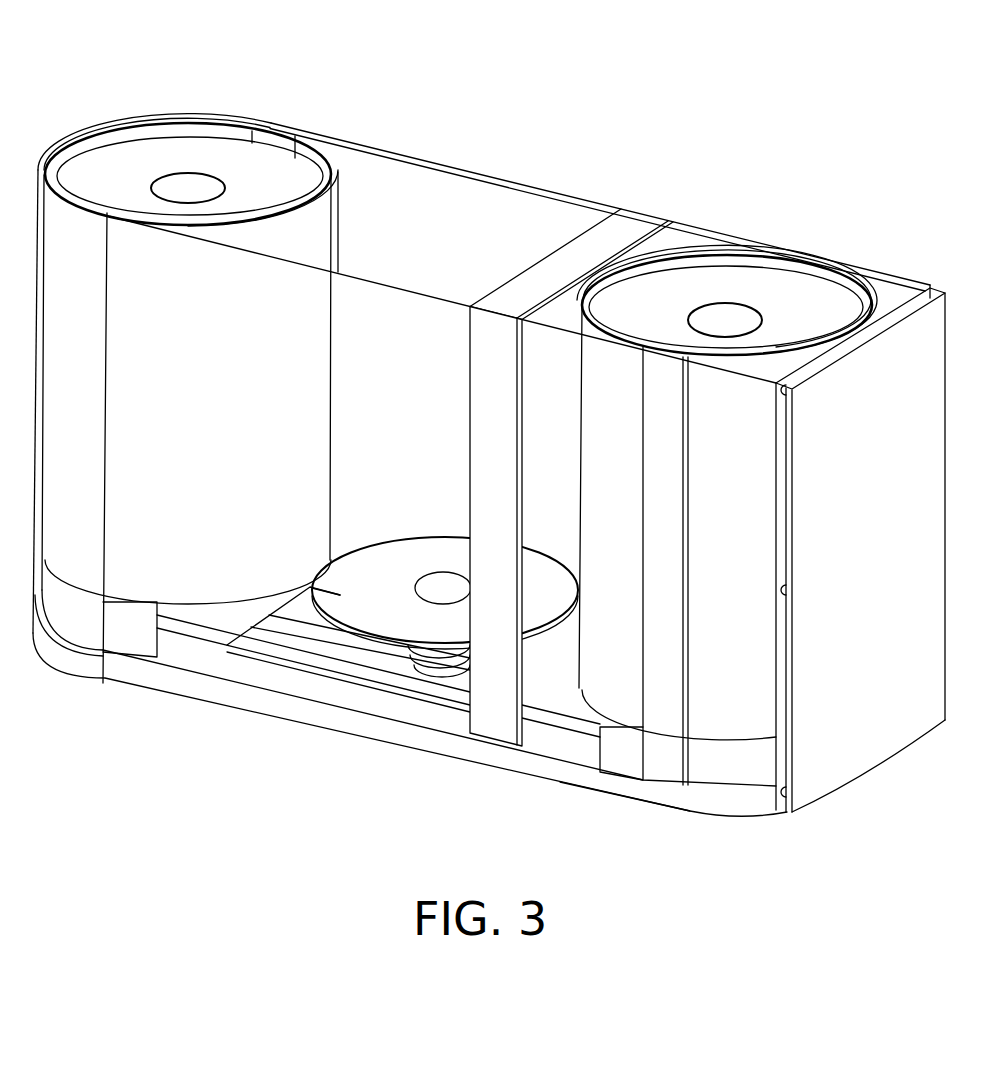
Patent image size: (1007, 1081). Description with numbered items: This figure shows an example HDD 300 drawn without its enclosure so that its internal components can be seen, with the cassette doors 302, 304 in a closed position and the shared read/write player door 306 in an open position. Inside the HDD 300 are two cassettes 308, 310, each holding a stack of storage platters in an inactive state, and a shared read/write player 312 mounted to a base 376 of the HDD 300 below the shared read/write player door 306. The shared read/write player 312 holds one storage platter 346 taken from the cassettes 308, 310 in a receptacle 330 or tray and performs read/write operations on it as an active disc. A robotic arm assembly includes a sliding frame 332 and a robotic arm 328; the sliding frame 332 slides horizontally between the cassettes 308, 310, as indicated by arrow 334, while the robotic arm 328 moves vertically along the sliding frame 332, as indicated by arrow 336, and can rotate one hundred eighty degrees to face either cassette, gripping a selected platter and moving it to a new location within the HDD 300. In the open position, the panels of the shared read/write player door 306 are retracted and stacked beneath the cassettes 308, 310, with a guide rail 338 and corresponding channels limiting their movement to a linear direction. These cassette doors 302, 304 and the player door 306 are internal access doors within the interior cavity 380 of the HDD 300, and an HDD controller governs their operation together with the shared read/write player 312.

The HDD 300 is at (762, 92).
The cassette door 302 is at (232, 411).
The cassette door 304 is at (575, 478).
The shared read/write player door 306 is at (200, 647).
The cassette 308 is at (358, 195).
The cassette 310 is at (810, 250).
The shared read/write player 312 is at (373, 707).
The robotic arm 328 is at (540, 642).
The receptacle 330 is at (400, 688).
The sliding frame 332 is at (468, 515).
The arrow 334 is at (568, 375).
The arrow 336 is at (552, 680).
The guide rail 338 is at (340, 632).
The storage platter 346 is at (388, 601).
The base 376 is at (567, 787).
The interior cavity 380 is at (393, 521).